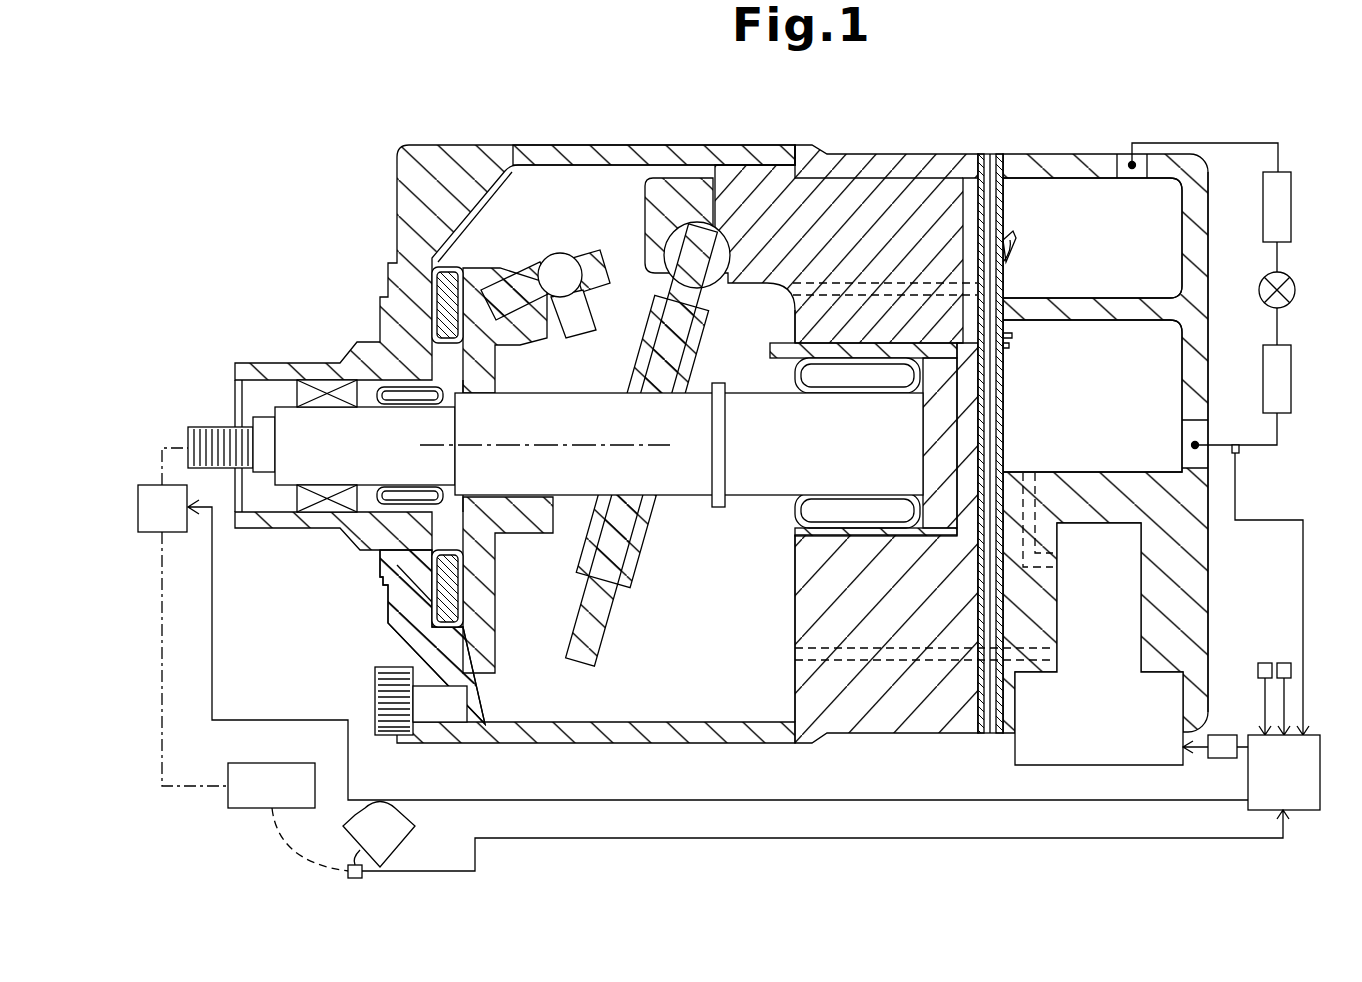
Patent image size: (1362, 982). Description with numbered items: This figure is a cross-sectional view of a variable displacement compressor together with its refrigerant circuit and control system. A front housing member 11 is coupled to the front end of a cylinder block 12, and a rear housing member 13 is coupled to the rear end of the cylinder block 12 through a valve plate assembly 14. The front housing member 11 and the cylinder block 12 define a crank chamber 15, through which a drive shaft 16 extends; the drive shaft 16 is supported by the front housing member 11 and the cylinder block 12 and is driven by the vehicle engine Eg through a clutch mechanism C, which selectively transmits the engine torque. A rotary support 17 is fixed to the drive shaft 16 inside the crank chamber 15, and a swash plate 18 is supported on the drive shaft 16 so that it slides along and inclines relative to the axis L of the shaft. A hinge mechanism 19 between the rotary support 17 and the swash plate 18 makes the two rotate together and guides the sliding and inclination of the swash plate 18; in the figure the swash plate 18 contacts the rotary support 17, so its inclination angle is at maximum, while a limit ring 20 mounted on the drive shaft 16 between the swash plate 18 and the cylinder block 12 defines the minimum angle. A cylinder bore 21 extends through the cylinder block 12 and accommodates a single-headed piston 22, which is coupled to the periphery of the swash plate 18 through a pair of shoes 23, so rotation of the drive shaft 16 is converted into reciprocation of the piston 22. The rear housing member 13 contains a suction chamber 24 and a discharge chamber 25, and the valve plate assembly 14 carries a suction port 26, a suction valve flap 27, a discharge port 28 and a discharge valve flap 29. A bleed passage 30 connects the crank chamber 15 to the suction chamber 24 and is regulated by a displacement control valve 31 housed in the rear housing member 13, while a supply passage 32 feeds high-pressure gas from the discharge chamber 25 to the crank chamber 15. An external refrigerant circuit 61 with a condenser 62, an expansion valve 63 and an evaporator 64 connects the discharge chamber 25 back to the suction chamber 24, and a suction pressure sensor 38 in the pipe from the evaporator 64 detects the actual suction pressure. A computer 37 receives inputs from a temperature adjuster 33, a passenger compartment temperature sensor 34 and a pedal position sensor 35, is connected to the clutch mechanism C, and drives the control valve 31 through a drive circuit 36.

The front housing member 11 is at (683, 744).
The cylinder block 12 is at (903, 733).
The rear housing member 13 is at (1209, 268).
The valve plate assembly 14 is at (990, 734).
The crank chamber 15 is at (678, 656).
The drive shaft 16 is at (677, 496).
The rotary support 17 is at (495, 672).
The swash plate 18 is at (594, 665).
The hinge mechanism 19 is at (558, 238).
The limit ring 20 is at (725, 508).
The cylinder bore 21 is at (872, 186).
The single-headed piston 22 is at (770, 165).
The shoes 23 is at (718, 178).
The suction chamber 24 is at (1097, 399).
The discharge chamber 25 is at (1105, 254).
The suction port 26 is at (1009, 346).
The suction valve flap 27 is at (1012, 335).
The discharge port 28 is at (1012, 250).
The discharge valve flap 29 is at (1013, 232).
The bleed passage 30 is at (1050, 490).
The displacement control valve 31 is at (1083, 671).
The supply passage 32 is at (795, 305).
The temperature adjuster 33 is at (1284, 663).
The passenger compartment temperature sensor 34 is at (1264, 663).
The pedal position sensor 35 is at (362, 878).
The drive circuit 36 is at (1225, 759).
The computer 37 is at (1310, 811).
The suction pressure sensor 38 is at (1240, 450).
The external refrigerant circuit 61 is at (1232, 143).
The condenser 62 is at (1278, 172).
The expansion valve 63 is at (1293, 282).
The evaporator 64 is at (1292, 352).
The clutch mechanism C is at (150, 478).
The engine Eg is at (228, 765).
The axis L is at (545, 440).